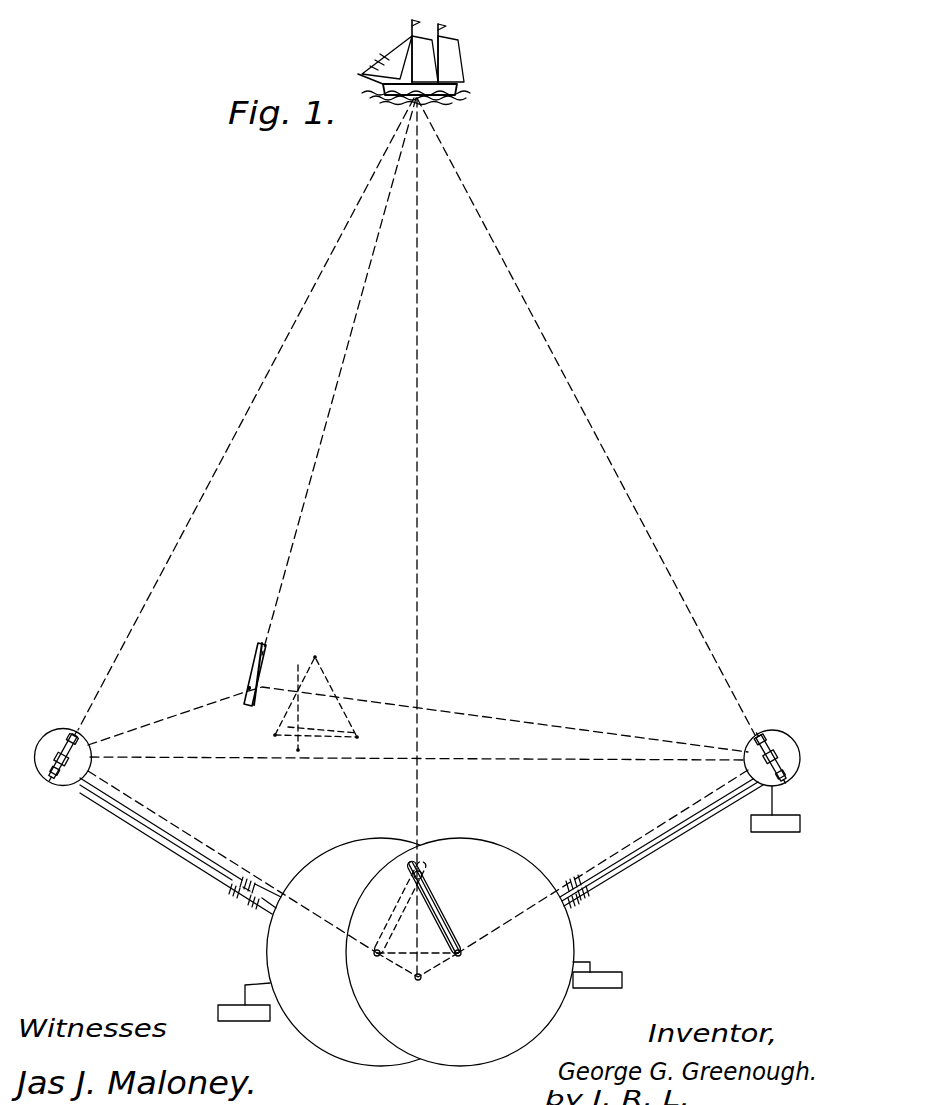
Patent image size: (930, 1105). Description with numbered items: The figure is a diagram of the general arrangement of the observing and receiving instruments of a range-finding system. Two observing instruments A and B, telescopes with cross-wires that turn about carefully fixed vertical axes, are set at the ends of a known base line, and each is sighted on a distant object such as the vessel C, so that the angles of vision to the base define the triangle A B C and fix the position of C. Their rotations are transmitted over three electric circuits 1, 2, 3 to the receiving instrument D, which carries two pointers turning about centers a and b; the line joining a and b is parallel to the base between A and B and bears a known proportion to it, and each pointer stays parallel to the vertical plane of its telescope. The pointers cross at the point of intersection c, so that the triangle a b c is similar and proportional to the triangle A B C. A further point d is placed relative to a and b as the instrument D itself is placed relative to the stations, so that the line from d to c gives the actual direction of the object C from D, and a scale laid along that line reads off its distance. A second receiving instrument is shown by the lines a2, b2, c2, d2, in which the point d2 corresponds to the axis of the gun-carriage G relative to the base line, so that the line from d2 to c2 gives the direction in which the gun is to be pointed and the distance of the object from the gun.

The circuit 1 is at (202, 855).
The circuit 2 is at (187, 853).
The circuit 3 is at (170, 851).
The observing instrument A is at (80, 750).
The observing instrument B is at (766, 742).
The vessel C is at (432, 64).
The receiving instrument D is at (420, 952).
The gun-carriage G is at (241, 674).
The center a is at (377, 953).
The center b is at (461, 953).
The point of intersection c is at (428, 868).
The point d is at (418, 980).
The point a2 is at (265, 745).
The point b2 is at (360, 747).
The point c2 is at (318, 657).
The point d2 is at (300, 755).